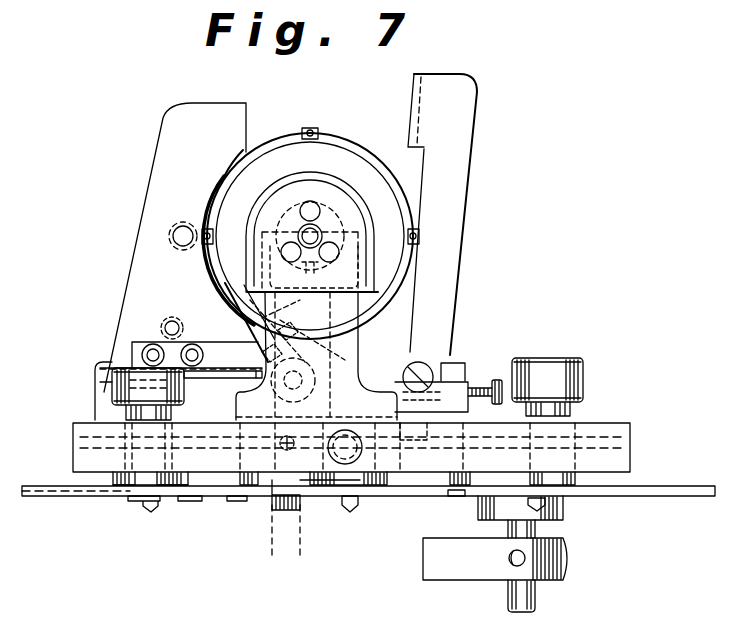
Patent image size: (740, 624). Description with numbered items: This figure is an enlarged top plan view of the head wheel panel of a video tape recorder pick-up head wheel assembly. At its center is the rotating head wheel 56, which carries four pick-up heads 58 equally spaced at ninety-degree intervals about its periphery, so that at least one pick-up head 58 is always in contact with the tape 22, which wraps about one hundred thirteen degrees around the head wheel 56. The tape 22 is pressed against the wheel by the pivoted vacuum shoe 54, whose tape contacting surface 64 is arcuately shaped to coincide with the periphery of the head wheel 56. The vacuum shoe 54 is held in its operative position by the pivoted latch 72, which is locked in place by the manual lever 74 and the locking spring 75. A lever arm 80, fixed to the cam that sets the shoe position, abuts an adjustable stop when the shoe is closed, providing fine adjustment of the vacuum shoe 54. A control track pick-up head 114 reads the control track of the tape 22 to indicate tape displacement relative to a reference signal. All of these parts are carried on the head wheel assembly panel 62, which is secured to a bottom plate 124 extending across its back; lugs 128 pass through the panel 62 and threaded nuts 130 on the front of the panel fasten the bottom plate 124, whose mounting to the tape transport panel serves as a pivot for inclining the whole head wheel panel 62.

The tape 22 is at (243, 153).
The vacuum shoe 54 is at (128, 301).
The head wheel 56 is at (360, 144).
The pick-up heads 58 is at (312, 129).
The head wheel assembly panel 62 is at (612, 442).
The tape contacting surface 64 is at (212, 198).
The pivoted latch 72 is at (442, 298).
The manual lever 74 is at (416, 84).
The locking spring 75 is at (301, 507).
The lever arm 80 is at (458, 576).
The control track pick-up head 114 is at (240, 323).
The bottom plate 124 is at (485, 325).
The lugs 128 is at (152, 506).
The threaded nuts 130 is at (112, 392).